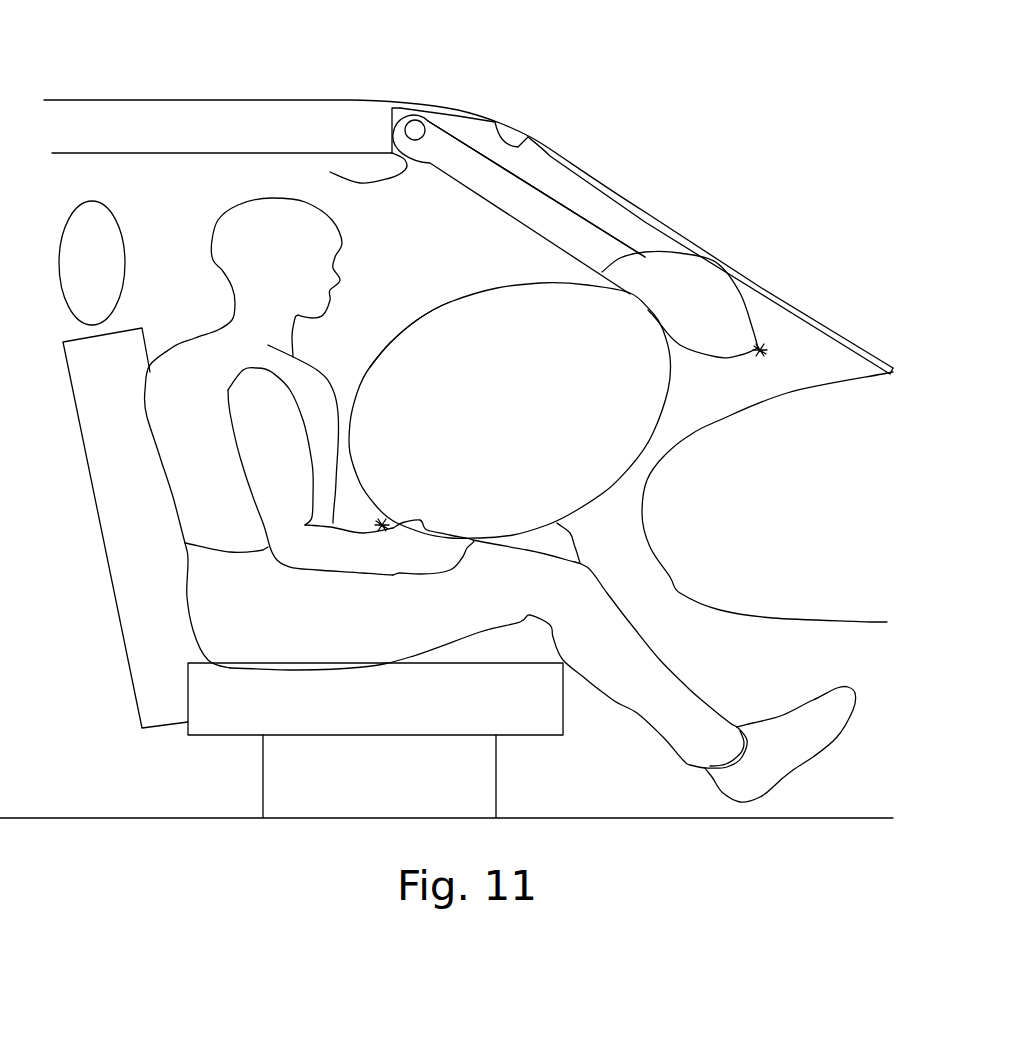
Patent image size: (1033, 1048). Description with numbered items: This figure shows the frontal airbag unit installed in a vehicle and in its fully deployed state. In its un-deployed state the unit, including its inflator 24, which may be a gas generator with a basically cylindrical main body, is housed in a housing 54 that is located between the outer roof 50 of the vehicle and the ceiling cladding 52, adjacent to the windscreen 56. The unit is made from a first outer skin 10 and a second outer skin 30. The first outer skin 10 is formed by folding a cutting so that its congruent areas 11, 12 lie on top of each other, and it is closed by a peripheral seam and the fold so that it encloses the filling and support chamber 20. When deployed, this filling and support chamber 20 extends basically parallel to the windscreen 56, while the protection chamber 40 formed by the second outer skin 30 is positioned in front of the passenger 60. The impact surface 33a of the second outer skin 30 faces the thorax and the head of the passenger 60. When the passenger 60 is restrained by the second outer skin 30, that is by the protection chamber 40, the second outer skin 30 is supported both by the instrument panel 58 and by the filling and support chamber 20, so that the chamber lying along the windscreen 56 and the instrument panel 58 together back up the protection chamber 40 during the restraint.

The first outer skin 10 is at (562, 207).
The congruent area 11 is at (633, 253).
The congruent area 12 is at (747, 287).
The filling and support chamber 20 is at (513, 197).
The inflator 24 is at (416, 120).
The second outer skin 30 is at (605, 633).
The impact surface 33a is at (398, 324).
The protection chamber 40 is at (512, 425).
The outer roof 50 is at (307, 100).
The ceiling cladding 52 is at (253, 153).
The housing 54 is at (480, 130).
The windscreen 56 is at (643, 217).
The instrument panel 58 is at (687, 435).
The passenger 60 is at (207, 362).